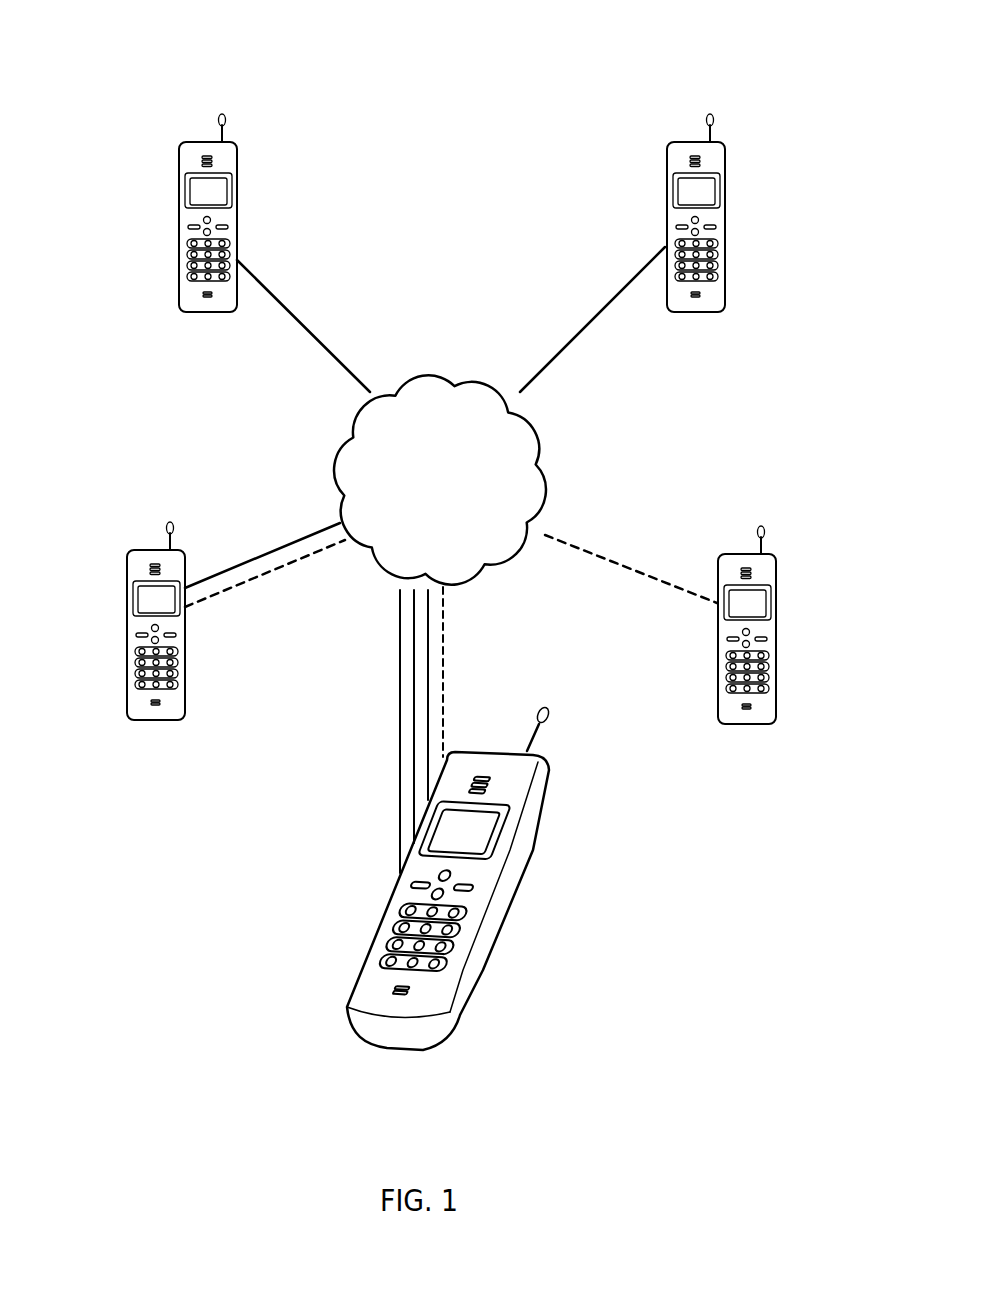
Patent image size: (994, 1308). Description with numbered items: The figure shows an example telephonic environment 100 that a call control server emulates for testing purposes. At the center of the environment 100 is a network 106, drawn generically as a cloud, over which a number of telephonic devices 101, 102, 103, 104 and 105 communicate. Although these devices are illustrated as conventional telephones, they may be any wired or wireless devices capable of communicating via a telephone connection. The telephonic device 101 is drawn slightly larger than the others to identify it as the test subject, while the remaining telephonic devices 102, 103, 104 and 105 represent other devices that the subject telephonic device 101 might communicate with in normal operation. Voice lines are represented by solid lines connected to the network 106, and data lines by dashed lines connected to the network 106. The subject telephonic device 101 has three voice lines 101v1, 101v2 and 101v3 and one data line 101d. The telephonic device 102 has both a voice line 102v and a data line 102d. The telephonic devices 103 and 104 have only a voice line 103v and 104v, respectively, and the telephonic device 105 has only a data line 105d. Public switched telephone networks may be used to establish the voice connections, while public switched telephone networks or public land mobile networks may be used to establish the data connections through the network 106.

The telephonic environment 100 is at (555, 108).
The telephonic device 101 is at (500, 903).
The telephonic device 102 is at (127, 633).
The telephonic device 103 is at (178, 226).
The telephonic device 104 is at (724, 238).
The telephonic device 105 is at (775, 650).
The network 106 is at (454, 512).
The voice line 101v1 is at (400, 640).
The voice line 101v2 is at (414, 670).
The voice line 101v3 is at (428, 702).
The data line 101d is at (445, 639).
The voice line 102v is at (278, 547).
The data line 102d is at (233, 587).
The voice line 103v is at (320, 338).
The voice line 104v is at (593, 318).
The data line 105d is at (623, 565).